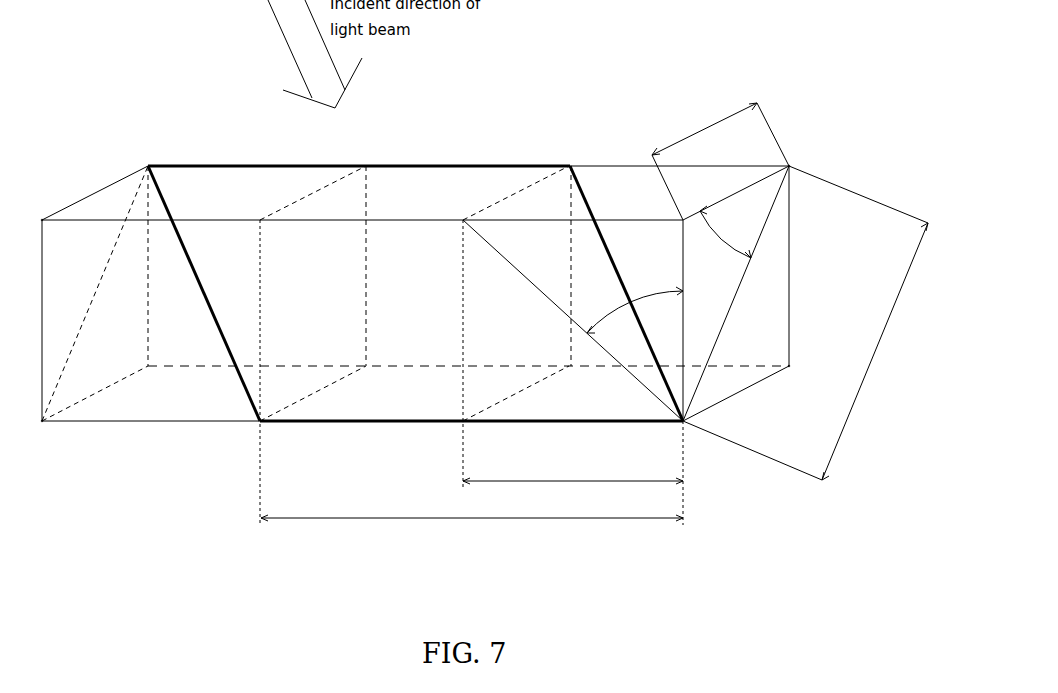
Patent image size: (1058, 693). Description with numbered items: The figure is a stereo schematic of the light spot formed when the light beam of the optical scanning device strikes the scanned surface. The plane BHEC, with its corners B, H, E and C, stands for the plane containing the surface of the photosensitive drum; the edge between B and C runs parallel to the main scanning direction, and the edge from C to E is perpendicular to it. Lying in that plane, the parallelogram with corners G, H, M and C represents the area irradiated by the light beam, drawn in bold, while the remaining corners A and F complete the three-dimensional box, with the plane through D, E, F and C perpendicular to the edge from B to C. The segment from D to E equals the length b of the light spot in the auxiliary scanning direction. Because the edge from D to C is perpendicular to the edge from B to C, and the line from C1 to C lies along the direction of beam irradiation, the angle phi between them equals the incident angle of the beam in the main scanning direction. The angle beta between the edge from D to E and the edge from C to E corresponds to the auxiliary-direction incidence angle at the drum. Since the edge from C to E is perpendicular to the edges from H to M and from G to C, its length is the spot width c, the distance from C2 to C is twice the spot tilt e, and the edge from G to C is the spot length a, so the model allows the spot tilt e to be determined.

The vertex A is at (34, 220).
The vertex B is at (31, 426).
The vertex C is at (743, 323).
The vertex D is at (724, 206).
The vertex E is at (796, 160).
The vertex F is at (795, 378).
The vertex G is at (463, 435).
The vertex H is at (353, 286).
The vertex M is at (626, 286).
The point C1 is at (564, 309).
The point C2 is at (443, 410).
The length of the light spot a is at (472, 512).
The length of the light spot in the auxiliary scanning direction b is at (720, 161).
The width of the light spot in the auxiliary scanning direction c is at (858, 323).
The spot tilt e is at (573, 475).
The incident angle phi is at (635, 308).
The angle between DE and CE beta is at (725, 232).